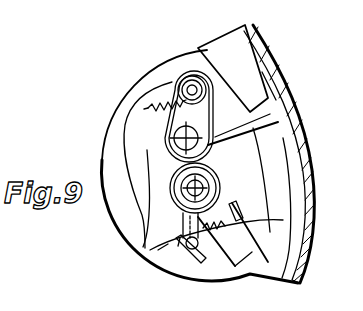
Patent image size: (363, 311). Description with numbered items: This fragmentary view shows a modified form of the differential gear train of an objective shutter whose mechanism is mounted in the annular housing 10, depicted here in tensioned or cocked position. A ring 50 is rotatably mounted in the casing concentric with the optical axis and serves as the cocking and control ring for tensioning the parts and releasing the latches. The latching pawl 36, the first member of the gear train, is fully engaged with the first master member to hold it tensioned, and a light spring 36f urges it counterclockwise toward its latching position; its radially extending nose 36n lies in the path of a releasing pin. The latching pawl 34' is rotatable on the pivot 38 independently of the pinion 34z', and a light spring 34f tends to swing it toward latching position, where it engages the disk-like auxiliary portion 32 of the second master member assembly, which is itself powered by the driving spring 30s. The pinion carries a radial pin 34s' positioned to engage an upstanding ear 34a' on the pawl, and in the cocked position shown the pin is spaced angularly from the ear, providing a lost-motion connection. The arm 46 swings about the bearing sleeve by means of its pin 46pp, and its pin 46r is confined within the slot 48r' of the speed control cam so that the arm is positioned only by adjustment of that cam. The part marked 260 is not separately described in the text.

The housing 10 is at (260, 47).
The cover plate 260 is at (158, 75).
The light spring 36f is at (157, 88).
The arm 46 is at (148, 104).
The pin 46pp is at (178, 147).
The pin 46r is at (177, 78).
The cam slot 48r' is at (188, 56).
The pawl 36 is at (224, 85).
The nose 36n is at (272, 100).
The ring 50 is at (278, 137).
The ear 34a' is at (243, 186).
The latching pawl 34' is at (238, 233).
The pin 38 is at (193, 193).
The pinion 34z' is at (128, 227).
The radial pin 34s' is at (124, 262).
The driving spring 30s is at (175, 258).
The light spring 34f is at (198, 258).
The auxiliary portion 32 is at (252, 268).